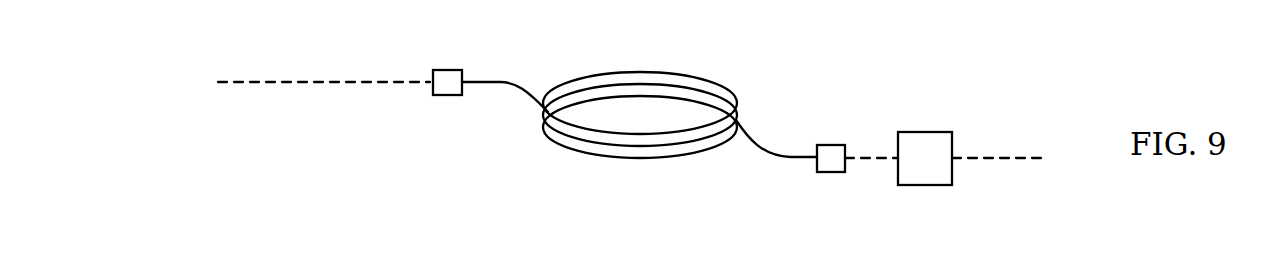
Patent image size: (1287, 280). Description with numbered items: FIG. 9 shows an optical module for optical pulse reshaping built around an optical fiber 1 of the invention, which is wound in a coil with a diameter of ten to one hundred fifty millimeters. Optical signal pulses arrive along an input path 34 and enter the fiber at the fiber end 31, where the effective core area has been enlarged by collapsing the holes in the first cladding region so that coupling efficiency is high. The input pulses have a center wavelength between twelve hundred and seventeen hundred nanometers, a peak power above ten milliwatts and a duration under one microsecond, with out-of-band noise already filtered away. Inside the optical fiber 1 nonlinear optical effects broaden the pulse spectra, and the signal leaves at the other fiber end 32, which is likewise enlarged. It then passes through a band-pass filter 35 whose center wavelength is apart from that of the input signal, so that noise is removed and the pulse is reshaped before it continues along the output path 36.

The optical fiber 1 is at (639, 104).
The fiber end 31 is at (451, 65).
The fiber end 32 is at (826, 142).
The input light path 34 is at (324, 64).
The band-pass filter 35 is at (898, 141).
The output light path 36 is at (998, 140).